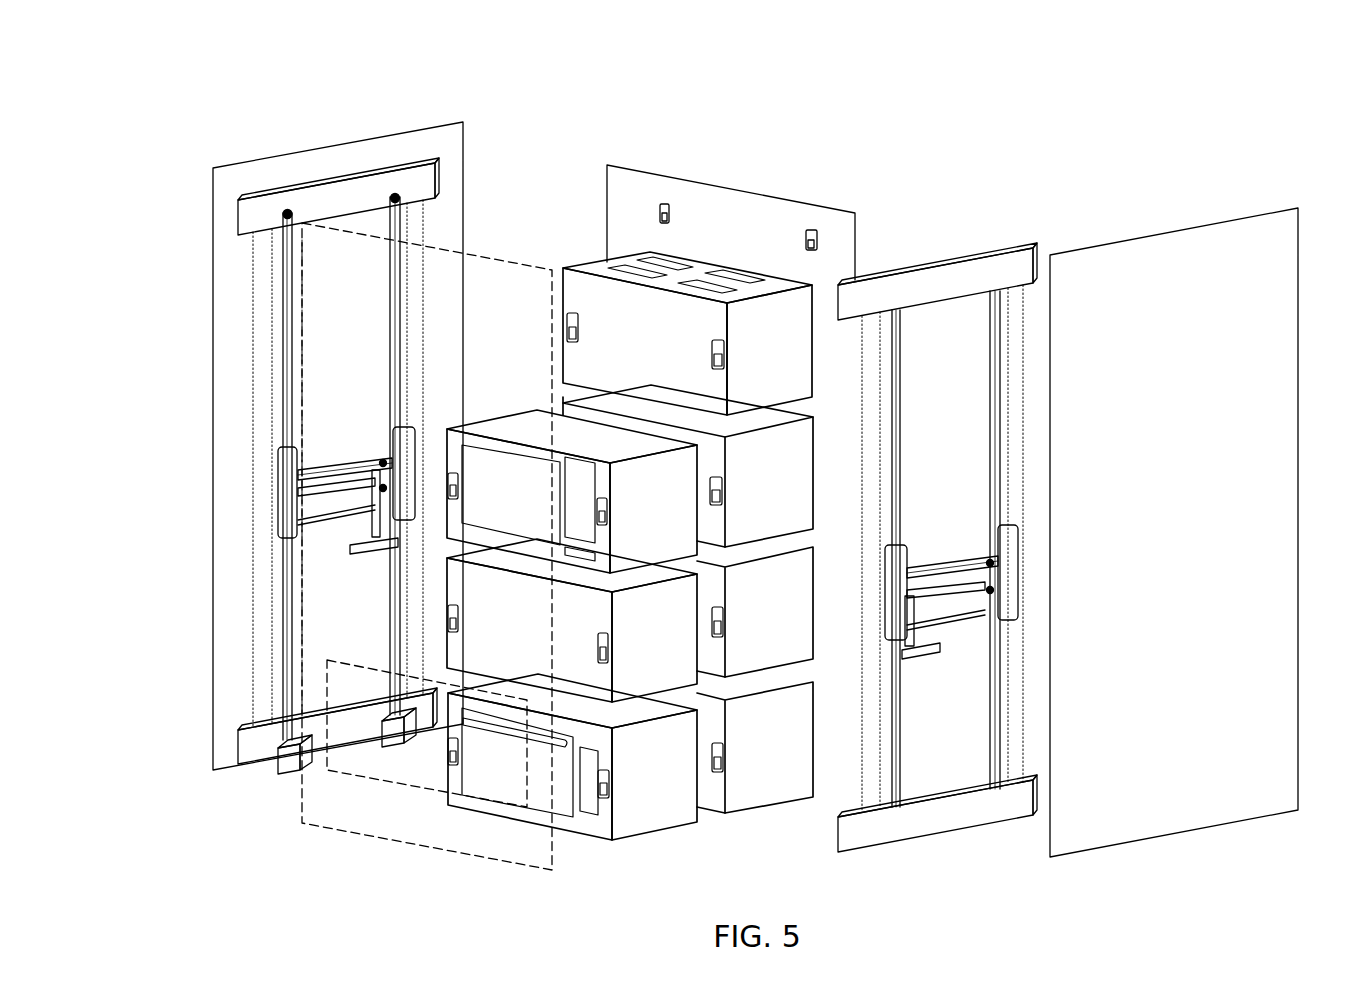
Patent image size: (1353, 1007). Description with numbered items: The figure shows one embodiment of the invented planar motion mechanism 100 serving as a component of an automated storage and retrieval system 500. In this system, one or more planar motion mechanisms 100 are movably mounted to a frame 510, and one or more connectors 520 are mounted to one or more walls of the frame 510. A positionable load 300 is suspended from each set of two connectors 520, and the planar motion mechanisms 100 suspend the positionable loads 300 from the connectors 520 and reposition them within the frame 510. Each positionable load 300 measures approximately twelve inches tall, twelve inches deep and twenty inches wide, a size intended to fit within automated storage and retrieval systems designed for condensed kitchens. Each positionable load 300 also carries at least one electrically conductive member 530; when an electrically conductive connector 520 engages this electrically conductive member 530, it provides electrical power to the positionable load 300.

The automated storage and retrieval system 500 is at (505, 83).
The frame 510 is at (230, 164).
The connector 520 is at (808, 230).
The planar motion mechanism 100 is at (355, 197).
The positionable load 300 is at (653, 836).
The electrically conductive member 530 is at (602, 799).